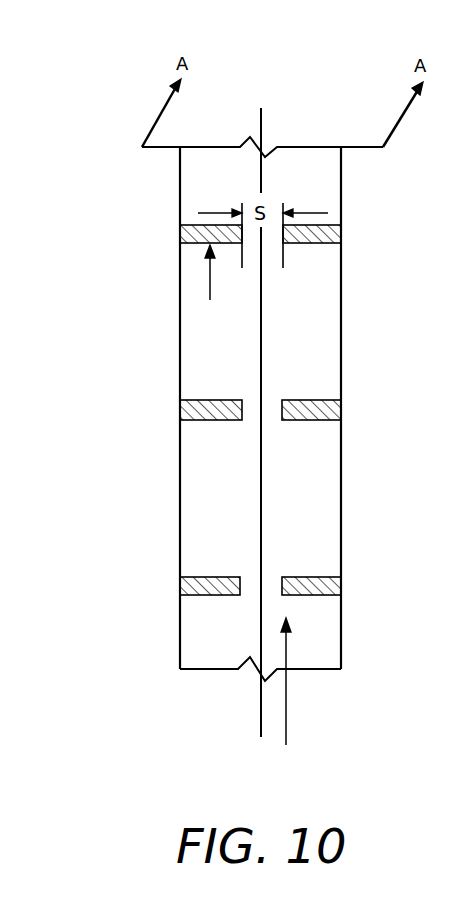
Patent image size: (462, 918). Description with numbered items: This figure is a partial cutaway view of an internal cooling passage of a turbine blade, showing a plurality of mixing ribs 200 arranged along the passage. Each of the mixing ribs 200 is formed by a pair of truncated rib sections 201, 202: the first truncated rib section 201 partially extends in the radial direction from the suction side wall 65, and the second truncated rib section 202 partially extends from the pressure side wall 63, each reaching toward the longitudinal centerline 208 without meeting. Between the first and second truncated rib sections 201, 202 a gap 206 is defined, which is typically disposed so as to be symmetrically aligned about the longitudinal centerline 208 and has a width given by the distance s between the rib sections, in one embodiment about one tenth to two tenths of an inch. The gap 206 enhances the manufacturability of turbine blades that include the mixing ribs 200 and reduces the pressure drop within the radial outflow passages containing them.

The pressure side wall 63 is at (342, 340).
The suction side wall 65 is at (180, 388).
The mixing ribs 200 is at (333, 412).
The first truncated rib section 201 is at (187, 233).
The second truncated rib section 202 is at (323, 233).
The gap 206 is at (262, 587).
The longitudinal centerline 208 is at (261, 108).